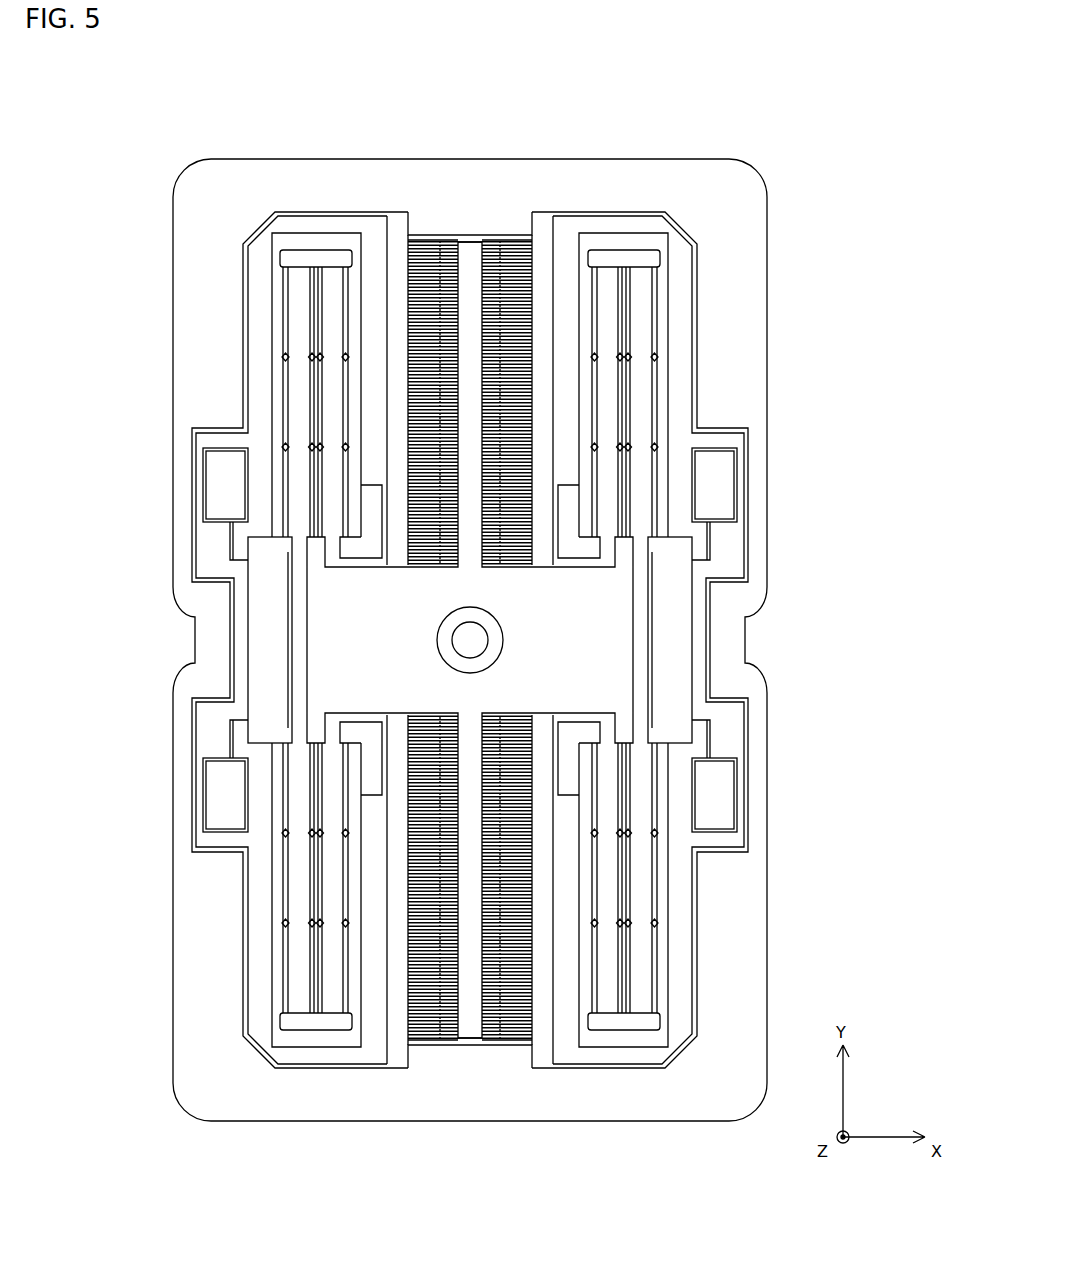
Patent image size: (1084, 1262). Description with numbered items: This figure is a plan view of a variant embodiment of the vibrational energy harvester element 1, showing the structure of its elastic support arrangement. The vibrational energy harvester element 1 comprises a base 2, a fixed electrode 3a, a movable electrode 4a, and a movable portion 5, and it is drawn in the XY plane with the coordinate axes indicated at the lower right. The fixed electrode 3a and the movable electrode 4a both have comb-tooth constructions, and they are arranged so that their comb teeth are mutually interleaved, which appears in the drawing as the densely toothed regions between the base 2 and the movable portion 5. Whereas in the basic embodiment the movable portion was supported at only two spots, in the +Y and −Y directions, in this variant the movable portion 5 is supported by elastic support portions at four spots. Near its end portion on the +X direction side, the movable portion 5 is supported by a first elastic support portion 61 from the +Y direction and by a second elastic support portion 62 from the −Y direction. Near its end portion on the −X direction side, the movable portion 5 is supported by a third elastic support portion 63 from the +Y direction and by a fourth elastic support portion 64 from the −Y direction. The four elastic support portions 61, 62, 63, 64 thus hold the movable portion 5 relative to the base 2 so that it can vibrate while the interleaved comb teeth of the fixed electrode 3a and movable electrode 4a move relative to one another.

The vibrational energy harvester element 1 is at (822, 101).
The base 2 is at (342, 1098).
The fixed electrode 3a is at (418, 242).
The movable electrode 4a is at (453, 242).
The movable portion 5 is at (595, 618).
The first elastic support portion 61 is at (630, 353).
The second elastic support portion 62 is at (630, 923).
The third elastic support portion 63 is at (307, 323).
The fourth elastic support portion 64 is at (307, 905).